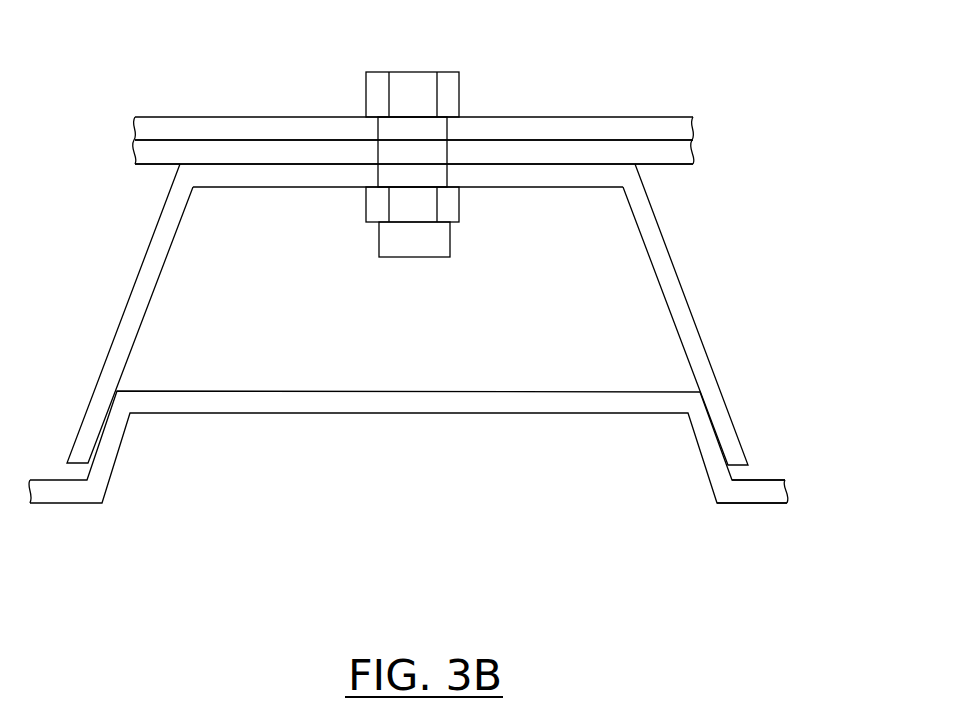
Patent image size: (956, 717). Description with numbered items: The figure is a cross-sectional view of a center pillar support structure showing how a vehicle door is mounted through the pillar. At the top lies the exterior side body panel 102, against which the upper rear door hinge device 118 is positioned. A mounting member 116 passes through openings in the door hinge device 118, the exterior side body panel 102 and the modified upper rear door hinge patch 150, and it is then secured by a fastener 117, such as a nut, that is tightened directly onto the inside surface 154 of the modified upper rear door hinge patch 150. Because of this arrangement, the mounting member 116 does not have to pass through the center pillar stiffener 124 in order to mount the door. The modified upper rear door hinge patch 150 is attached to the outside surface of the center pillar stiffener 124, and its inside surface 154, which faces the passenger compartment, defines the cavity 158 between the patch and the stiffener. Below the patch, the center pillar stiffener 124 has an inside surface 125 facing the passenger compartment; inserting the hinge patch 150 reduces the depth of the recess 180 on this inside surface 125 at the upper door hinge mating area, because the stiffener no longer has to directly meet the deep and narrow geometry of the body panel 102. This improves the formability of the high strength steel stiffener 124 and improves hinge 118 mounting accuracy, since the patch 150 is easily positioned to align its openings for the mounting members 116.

The exterior side body panel 102 is at (670, 155).
The mounting member 116 is at (413, 90).
The fastener 117 is at (413, 207).
The upper rear door hinge device 118 is at (677, 128).
The center pillar stiffener 124 is at (758, 495).
The inside surface of center pillar stiffener 125 is at (203, 413).
The modified upper rear door hinge patch 150 is at (675, 300).
The inside surface of modified upper rear door hinge patch 154 is at (249, 187).
The cavity 158 is at (430, 338).
The recess 180 is at (423, 472).